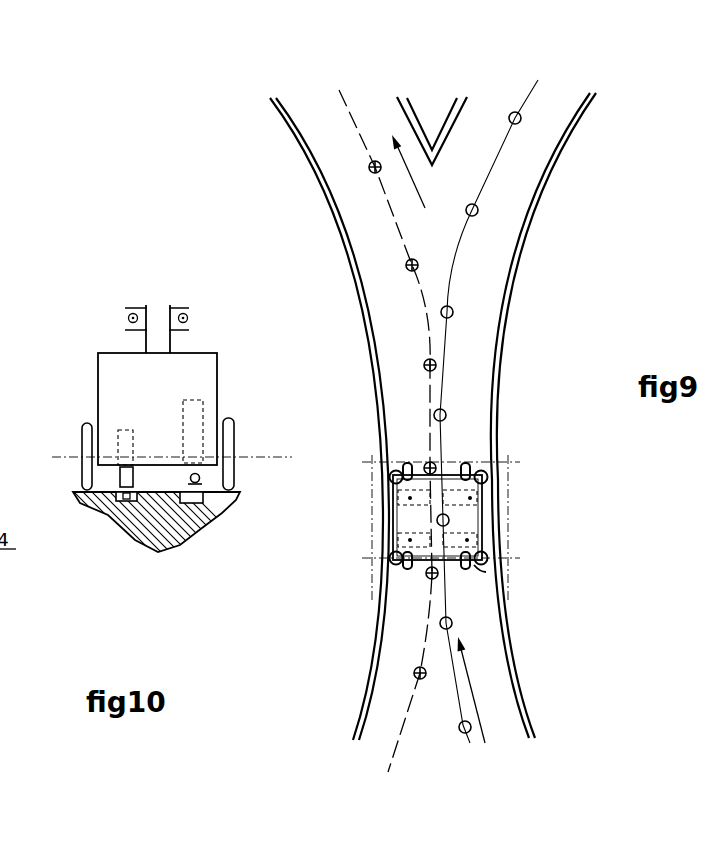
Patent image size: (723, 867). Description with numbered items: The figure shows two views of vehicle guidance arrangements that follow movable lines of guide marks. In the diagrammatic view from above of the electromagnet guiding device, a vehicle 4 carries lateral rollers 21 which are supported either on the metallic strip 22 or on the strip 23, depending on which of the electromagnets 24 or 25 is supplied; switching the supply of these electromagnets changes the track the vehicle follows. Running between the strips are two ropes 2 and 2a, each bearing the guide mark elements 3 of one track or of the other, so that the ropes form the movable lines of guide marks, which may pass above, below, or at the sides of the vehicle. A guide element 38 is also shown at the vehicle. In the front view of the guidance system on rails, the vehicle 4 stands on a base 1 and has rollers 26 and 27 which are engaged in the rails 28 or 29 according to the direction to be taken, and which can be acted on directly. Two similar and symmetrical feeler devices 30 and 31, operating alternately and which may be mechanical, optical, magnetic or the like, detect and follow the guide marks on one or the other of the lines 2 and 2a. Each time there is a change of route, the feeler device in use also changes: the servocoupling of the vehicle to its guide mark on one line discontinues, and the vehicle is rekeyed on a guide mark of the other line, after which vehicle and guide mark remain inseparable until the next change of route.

In FIG. 10, the base body 1 is at (158, 532).
In FIG. 9, the rope 2 is at (387, 195).
In FIG. 10, the rope 2 is at (126, 318).
In FIG. 9, the rope 2a is at (527, 182).
In FIG. 10, the rope 2a is at (190, 318).
In FIG. 9, the guide mark element 3 is at (369, 167).
In FIG. 9, the carriage 4 is at (453, 578).
In FIG. 10, the carriage 4 is at (98, 372).
In FIG. 9, the lateral roller 21 is at (391, 470).
In FIG. 9, the metallic strip 22 is at (503, 333).
In FIG. 9, the strip 23 is at (368, 312).
In FIG. 9, the electromagnet 24 is at (486, 495).
In FIG. 9, the electromagnet 25 is at (398, 497).
In FIG. 10, the roller 26 is at (127, 497).
In FIG. 10, the roller 27 is at (224, 526).
In FIG. 10, the rail 28 is at (136, 502).
In FIG. 10, the rail 29 is at (185, 505).
In FIG. 10, the feeler device 30 is at (147, 305).
In FIG. 10, the feeler device 31 is at (170, 305).
In FIG. 9, the guide element 38 is at (486, 572).